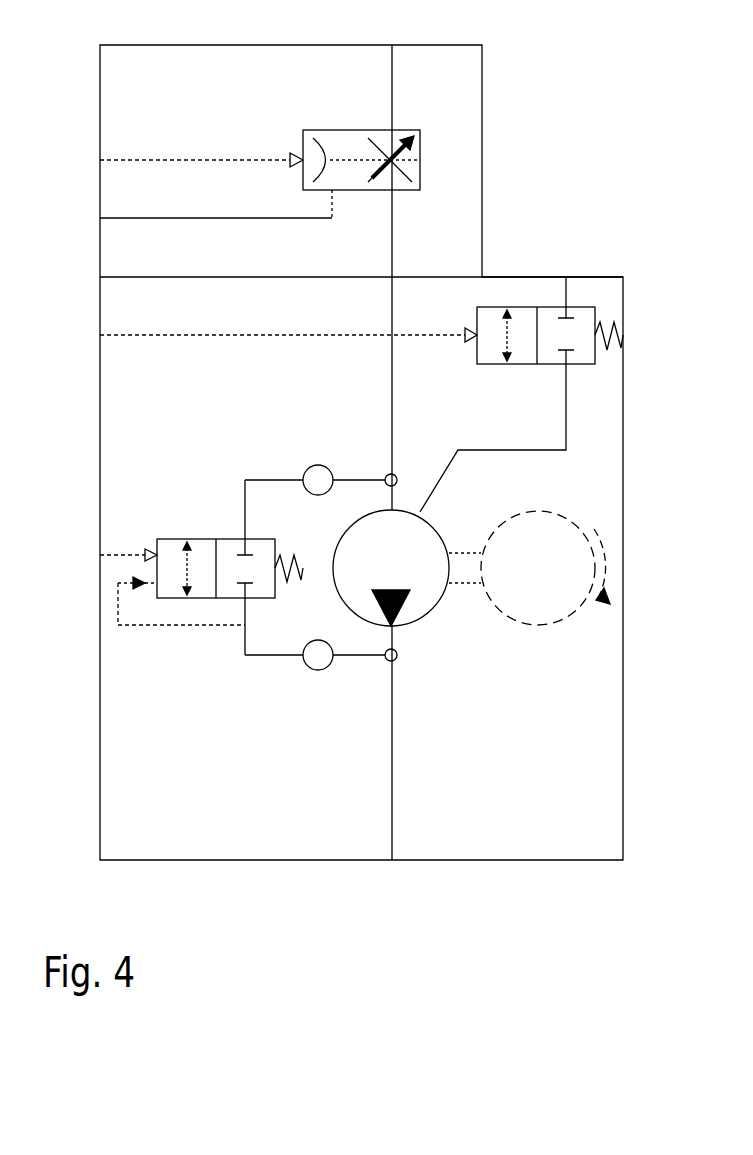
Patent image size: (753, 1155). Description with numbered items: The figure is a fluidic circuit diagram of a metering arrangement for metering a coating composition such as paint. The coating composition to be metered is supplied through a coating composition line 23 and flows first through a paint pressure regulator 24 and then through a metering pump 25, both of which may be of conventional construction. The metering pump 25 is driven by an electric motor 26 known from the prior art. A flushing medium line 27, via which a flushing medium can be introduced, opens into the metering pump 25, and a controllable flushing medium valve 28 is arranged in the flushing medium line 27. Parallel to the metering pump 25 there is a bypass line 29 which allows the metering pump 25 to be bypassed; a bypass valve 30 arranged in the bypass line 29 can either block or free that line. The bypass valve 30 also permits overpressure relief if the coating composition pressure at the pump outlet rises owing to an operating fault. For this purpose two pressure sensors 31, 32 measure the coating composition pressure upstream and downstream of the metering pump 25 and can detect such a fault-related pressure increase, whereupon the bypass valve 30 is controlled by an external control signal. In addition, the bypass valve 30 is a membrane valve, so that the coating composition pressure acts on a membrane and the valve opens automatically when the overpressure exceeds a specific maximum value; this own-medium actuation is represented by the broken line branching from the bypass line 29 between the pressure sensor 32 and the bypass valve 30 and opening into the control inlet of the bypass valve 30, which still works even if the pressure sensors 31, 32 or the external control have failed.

The coating composition line 23 is at (392, 255).
The paint pressure regulator 24 is at (420, 160).
The metering pump 25 is at (428, 612).
The electric motor 26 is at (578, 528).
The flushing medium line 27 is at (566, 425).
The flushing medium valve 28 is at (585, 306).
The bypass line 29 is at (245, 642).
The bypass valve 30 is at (157, 539).
The pressure sensor 31 is at (318, 478).
The pressure sensor 32 is at (318, 668).